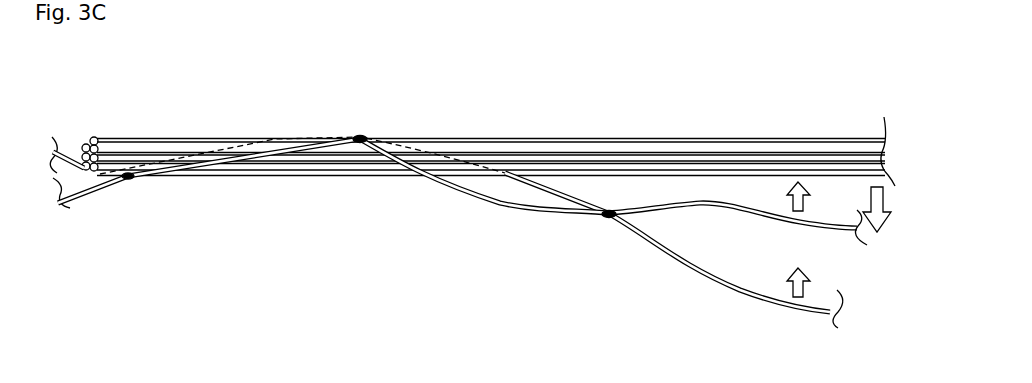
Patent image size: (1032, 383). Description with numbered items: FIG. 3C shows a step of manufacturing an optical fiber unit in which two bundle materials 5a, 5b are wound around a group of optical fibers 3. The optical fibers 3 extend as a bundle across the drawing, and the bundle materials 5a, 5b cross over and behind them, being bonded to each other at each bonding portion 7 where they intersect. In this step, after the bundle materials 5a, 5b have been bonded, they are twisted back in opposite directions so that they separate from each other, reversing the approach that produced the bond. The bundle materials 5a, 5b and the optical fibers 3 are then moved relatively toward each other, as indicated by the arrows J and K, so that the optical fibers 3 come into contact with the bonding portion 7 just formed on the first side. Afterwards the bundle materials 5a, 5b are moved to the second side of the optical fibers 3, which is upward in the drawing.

The optical fibers 3 is at (613, 152).
The bundle material 5a is at (690, 270).
The bundle material 5b is at (533, 188).
The bonding portion 7 is at (360, 139).
The arrow J is at (803, 243).
The arrow K is at (885, 209).